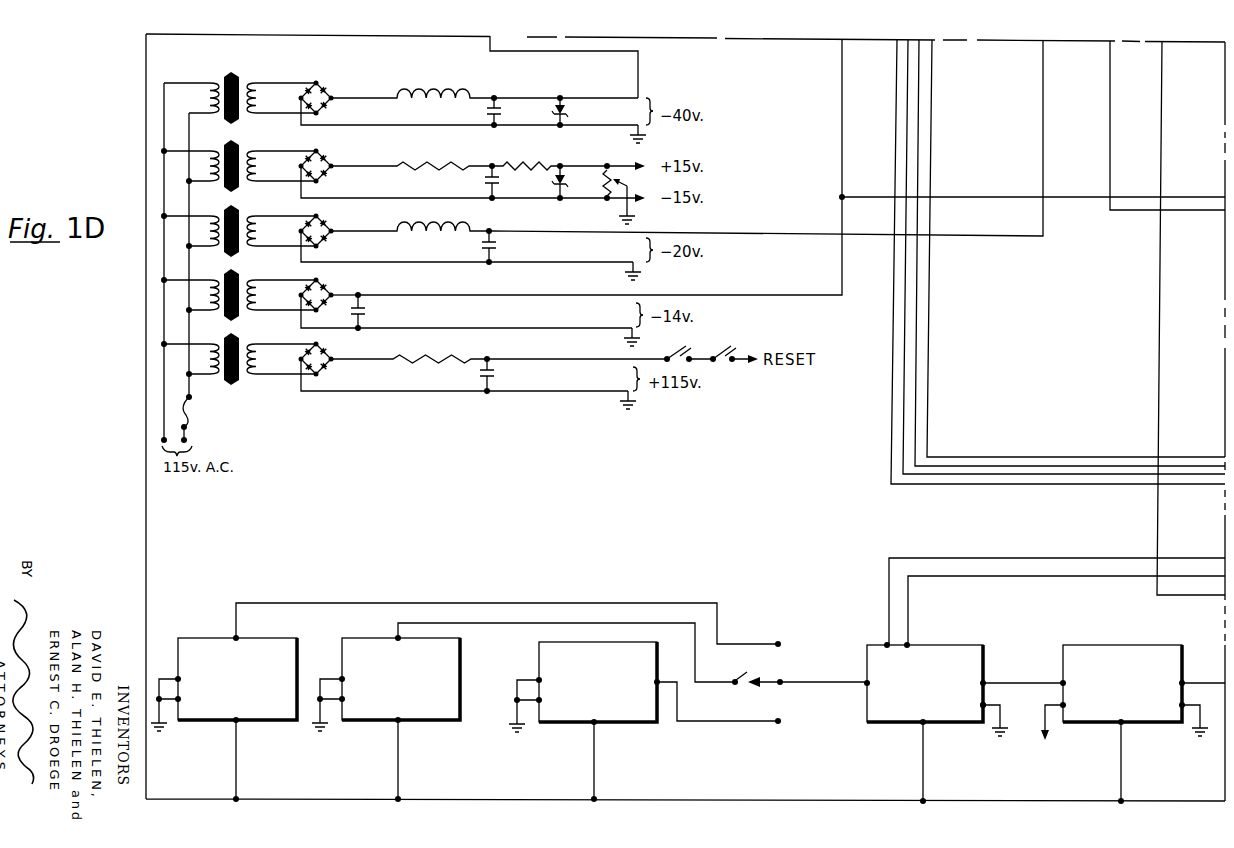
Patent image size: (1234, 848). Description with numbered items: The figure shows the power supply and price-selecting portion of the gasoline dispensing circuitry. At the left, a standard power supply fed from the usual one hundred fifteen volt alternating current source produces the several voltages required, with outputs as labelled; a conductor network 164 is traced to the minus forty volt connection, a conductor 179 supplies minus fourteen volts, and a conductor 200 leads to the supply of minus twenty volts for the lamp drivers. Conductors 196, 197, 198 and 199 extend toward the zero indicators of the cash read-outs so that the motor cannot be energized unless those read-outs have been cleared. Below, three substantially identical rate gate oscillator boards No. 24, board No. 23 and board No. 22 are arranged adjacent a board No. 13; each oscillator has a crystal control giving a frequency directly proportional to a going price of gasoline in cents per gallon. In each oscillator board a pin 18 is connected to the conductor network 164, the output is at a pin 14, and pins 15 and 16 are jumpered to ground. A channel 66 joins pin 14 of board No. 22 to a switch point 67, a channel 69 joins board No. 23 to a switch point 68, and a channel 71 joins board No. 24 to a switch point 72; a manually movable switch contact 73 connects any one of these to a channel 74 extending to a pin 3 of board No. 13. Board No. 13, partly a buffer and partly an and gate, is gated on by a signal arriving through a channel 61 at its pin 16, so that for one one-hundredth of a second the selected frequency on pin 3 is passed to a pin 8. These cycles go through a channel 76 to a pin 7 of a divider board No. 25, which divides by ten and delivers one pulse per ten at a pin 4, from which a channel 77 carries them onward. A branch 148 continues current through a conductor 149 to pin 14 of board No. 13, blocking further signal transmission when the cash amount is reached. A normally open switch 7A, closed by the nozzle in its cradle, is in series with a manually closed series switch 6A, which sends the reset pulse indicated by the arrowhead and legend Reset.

The conductor network 164 is at (146, 62).
The conductor 179 is at (842, 50).
The conductor 196 is at (897, 55).
The conductor 197 is at (908, 80).
The conductor 198 is at (920, 60).
The conductor 199 is at (932, 96).
The conductor 200 is at (1043, 45).
The branch 148 is at (1110, 92).
The conductor 149 is at (1045, 558).
The channel 61 is at (1143, 580).
The series switch 6A is at (689, 345).
The normally open switch 7A is at (734, 346).
The channel 71 is at (465, 603).
The switch point 72 is at (781, 646).
The channel 69 is at (512, 625).
The switch point 68 is at (746, 680).
The manually movable switch contact 73 is at (776, 686).
The channel 74 is at (828, 686).
The channel 66 is at (733, 722).
The switch point 67 is at (778, 724).
The channel 76 is at (1020, 683).
The pin 3 is at (866, 682).
The pin 4 is at (1183, 668).
The pin 7 is at (1060, 681).
The pin 8 is at (988, 678).
The pin 14 is at (237, 636).
The pin 15 is at (177, 678).
The pin 16 is at (176, 702).
The pin 18 is at (238, 722).
The channel 77 is at (1205, 683).
The board 24 is at (237, 679).
The board 23 is at (401, 679).
The board 22 is at (598, 682).
The board 13 is at (925, 683).
The divider board 25 is at (1122, 683).